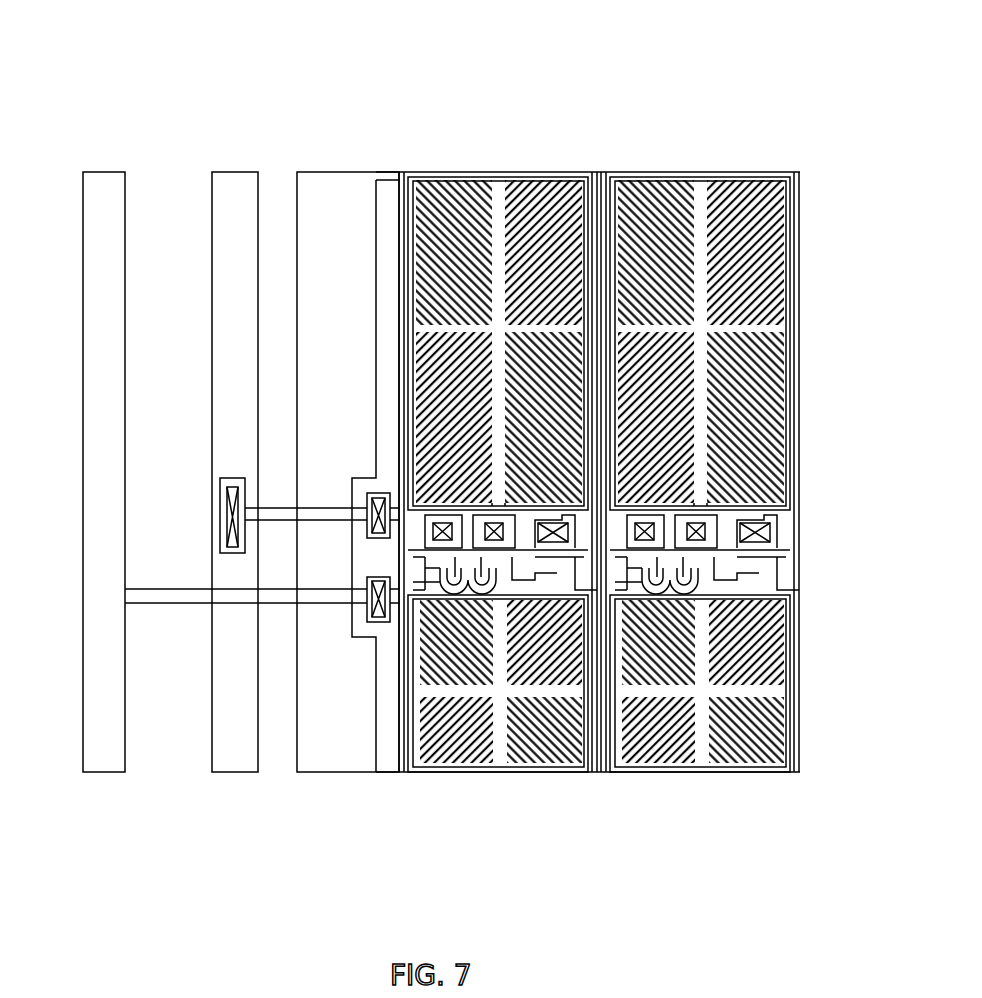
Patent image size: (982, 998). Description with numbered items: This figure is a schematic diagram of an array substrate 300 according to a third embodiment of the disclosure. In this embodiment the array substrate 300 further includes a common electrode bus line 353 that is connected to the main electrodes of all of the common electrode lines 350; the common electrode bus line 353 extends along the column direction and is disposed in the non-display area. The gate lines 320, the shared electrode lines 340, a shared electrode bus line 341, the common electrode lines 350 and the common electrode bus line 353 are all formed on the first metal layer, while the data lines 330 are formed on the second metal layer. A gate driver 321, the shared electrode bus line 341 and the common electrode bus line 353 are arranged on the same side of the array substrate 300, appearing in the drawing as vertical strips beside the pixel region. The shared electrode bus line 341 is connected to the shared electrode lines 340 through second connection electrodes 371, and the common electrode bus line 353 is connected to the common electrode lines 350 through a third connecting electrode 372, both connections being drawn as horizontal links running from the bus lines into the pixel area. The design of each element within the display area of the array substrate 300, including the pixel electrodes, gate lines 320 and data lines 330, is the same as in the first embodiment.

The array substrate 300 is at (161, 64).
The gate lines 320 is at (765, 578).
The gate driver 321 is at (115, 749).
The data lines 330 is at (403, 172).
The shared electrode lines 340 is at (780, 522).
The shared electrode bus line 341 is at (237, 758).
The common electrode lines 350 is at (590, 172).
The common electrode bus line 353 is at (323, 190).
The second connection electrodes 371 is at (288, 508).
The third connecting electrode 372 is at (192, 598).